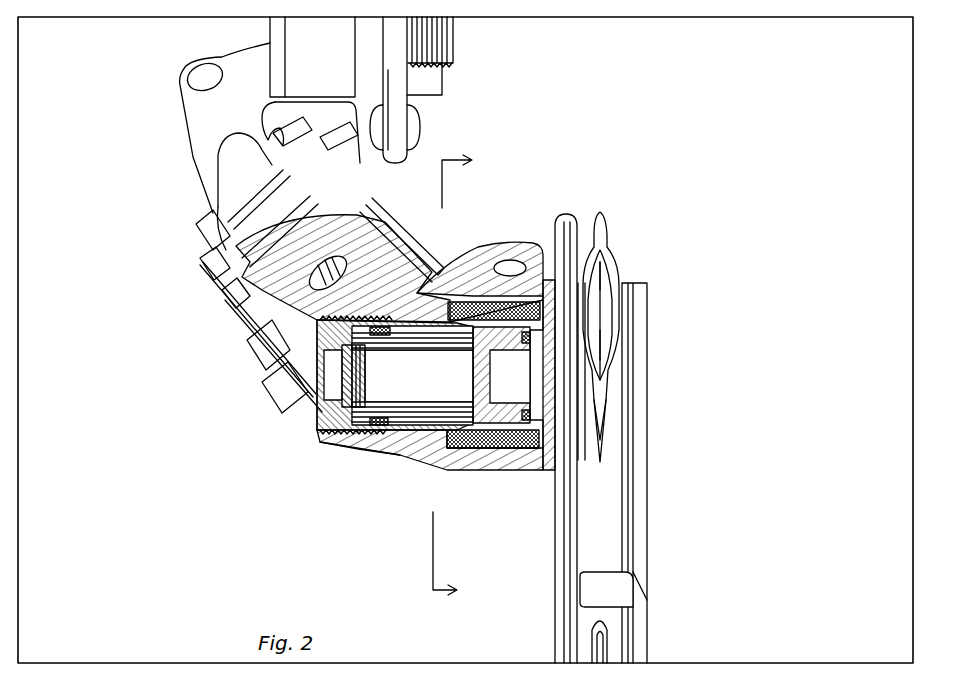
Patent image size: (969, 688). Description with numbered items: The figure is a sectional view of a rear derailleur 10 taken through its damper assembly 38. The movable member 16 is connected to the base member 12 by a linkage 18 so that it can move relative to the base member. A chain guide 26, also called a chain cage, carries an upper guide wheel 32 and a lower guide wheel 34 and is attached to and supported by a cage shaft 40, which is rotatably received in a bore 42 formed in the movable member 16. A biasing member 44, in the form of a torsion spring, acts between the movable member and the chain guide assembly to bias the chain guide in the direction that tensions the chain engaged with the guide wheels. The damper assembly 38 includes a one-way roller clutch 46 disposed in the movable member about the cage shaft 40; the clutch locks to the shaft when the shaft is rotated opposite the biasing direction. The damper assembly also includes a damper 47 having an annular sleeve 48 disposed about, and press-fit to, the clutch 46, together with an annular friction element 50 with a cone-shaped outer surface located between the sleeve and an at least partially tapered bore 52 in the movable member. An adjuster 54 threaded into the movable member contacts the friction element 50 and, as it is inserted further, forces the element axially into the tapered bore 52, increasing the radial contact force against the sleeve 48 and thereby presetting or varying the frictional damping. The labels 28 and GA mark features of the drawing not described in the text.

The derailleur 10 is at (498, 150).
The base member 12 is at (200, 152).
The movable member 16 is at (485, 258).
The linkage 18 is at (172, 293).
The chain guide 26 is at (537, 557).
The bicycle frame 28 is at (678, 266).
The upper guide wheel 32 is at (609, 212).
The lower guide wheel 34 is at (600, 640).
The damper assembly 38 is at (392, 444).
The cage shaft 40 is at (465, 455).
The bore 42 is at (512, 361).
The biasing member 44 is at (453, 268).
The clutch 46 is at (433, 407).
The damper 47 is at (345, 457).
The annular sleeve 48 is at (407, 425).
The friction element 50 is at (393, 425).
The tapered bore 52 is at (435, 259).
The adjuster 54 is at (313, 423).
The gear axis GA is at (665, 384).